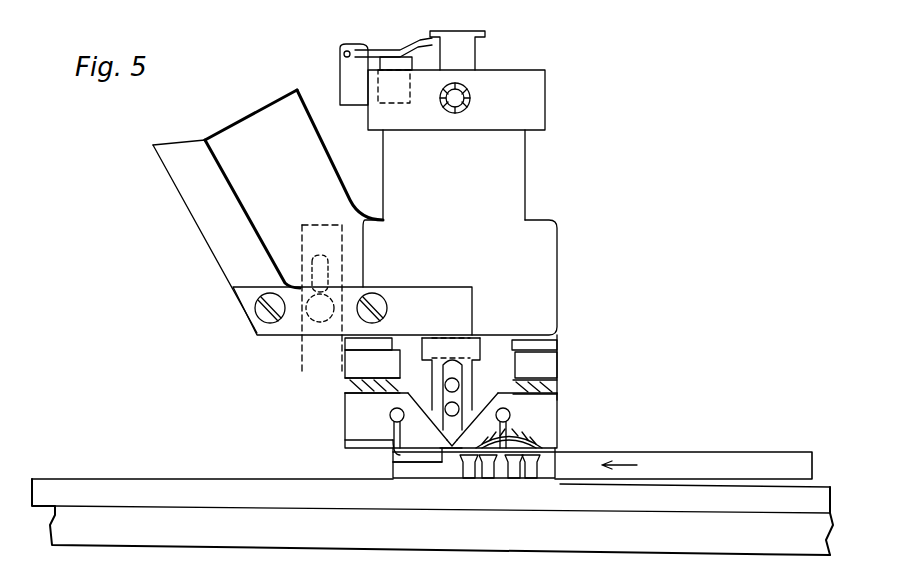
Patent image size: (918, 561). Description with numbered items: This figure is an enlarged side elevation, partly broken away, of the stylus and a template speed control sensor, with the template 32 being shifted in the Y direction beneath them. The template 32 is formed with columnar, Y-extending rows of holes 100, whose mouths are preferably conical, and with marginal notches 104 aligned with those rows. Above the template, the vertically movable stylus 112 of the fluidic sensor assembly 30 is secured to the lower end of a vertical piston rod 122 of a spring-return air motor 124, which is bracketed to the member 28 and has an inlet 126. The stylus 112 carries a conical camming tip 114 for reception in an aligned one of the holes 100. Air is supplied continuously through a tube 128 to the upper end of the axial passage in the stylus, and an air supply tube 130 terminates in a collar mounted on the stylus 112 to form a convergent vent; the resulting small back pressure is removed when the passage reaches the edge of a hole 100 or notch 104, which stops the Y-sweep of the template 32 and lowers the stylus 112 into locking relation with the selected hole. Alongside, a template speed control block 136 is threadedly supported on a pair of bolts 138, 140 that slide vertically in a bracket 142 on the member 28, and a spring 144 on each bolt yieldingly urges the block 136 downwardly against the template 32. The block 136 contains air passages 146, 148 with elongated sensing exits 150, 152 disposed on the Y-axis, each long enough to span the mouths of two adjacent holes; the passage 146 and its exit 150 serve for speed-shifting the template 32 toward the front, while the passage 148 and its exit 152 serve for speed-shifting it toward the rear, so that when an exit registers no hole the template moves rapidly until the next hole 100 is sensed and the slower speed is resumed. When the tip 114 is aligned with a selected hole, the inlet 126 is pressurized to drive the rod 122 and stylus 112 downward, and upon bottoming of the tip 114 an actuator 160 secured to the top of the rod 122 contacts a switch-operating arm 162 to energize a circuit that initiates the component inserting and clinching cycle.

The member 28 is at (192, 222).
The fluidic sensor assembly 30 is at (634, 349).
The template 32 is at (752, 456).
The holes 100 is at (518, 478).
The marginal notches 104 is at (398, 456).
The stylus 112 is at (480, 340).
The conical camming tip 114 is at (447, 445).
The piston rod 122 is at (478, 63).
The spring-return air motor 124 is at (527, 182).
The inlet 126 is at (472, 98).
The tube 128 is at (445, 362).
The air supply tube 130 is at (452, 445).
The template speed control block 136 is at (345, 418).
The bolt 138 is at (420, 342).
The bolt 140 is at (560, 347).
The bracket 142 is at (348, 373).
The spring 144 is at (350, 388).
The air passage 146 is at (345, 438).
The air passage 148 is at (512, 415).
The sensing exit 150 is at (392, 442).
The sensing exit 152 is at (518, 440).
The actuator 160 is at (485, 33).
The switch-operating arm 162 is at (400, 50).